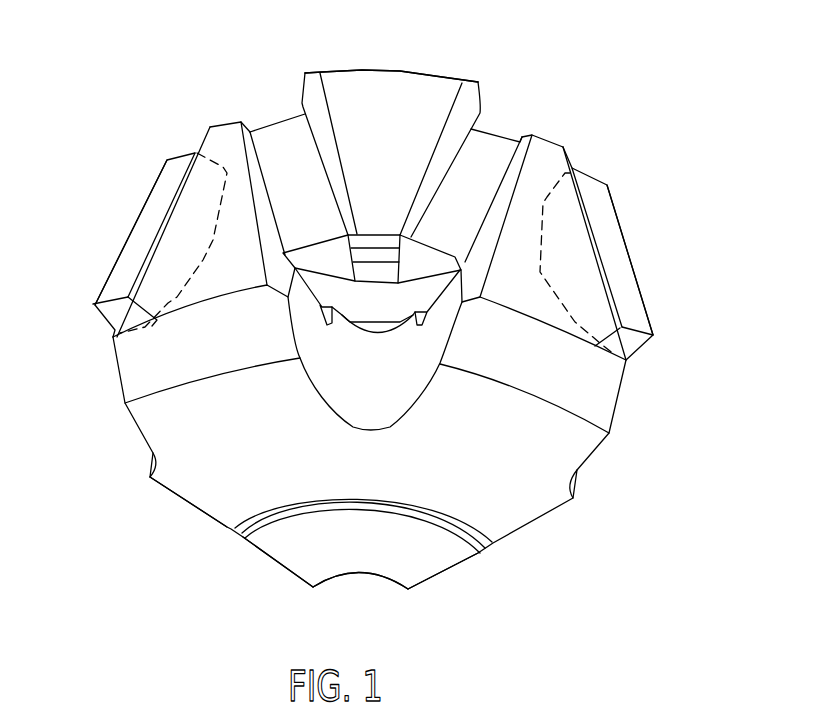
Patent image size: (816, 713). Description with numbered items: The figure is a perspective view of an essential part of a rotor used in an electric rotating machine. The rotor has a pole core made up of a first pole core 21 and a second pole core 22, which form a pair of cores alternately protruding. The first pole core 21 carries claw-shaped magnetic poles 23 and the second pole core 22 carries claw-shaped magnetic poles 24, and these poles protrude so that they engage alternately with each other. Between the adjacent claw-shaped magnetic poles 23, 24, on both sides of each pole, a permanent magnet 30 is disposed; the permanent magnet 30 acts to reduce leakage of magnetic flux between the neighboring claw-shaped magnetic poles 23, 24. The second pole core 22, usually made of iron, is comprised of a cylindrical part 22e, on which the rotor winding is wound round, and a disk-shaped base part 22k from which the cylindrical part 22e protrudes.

The first pole core 21 is at (438, 75).
The second pole core 22 is at (119, 378).
The cylindrical part 22e is at (277, 548).
The disk-shaped base part 22k is at (184, 478).
The claw-shaped magnetic pole 23 is at (387, 79).
The claw-shaped magnetic pole 24 is at (231, 120).
The permanent magnet 30 is at (285, 131).